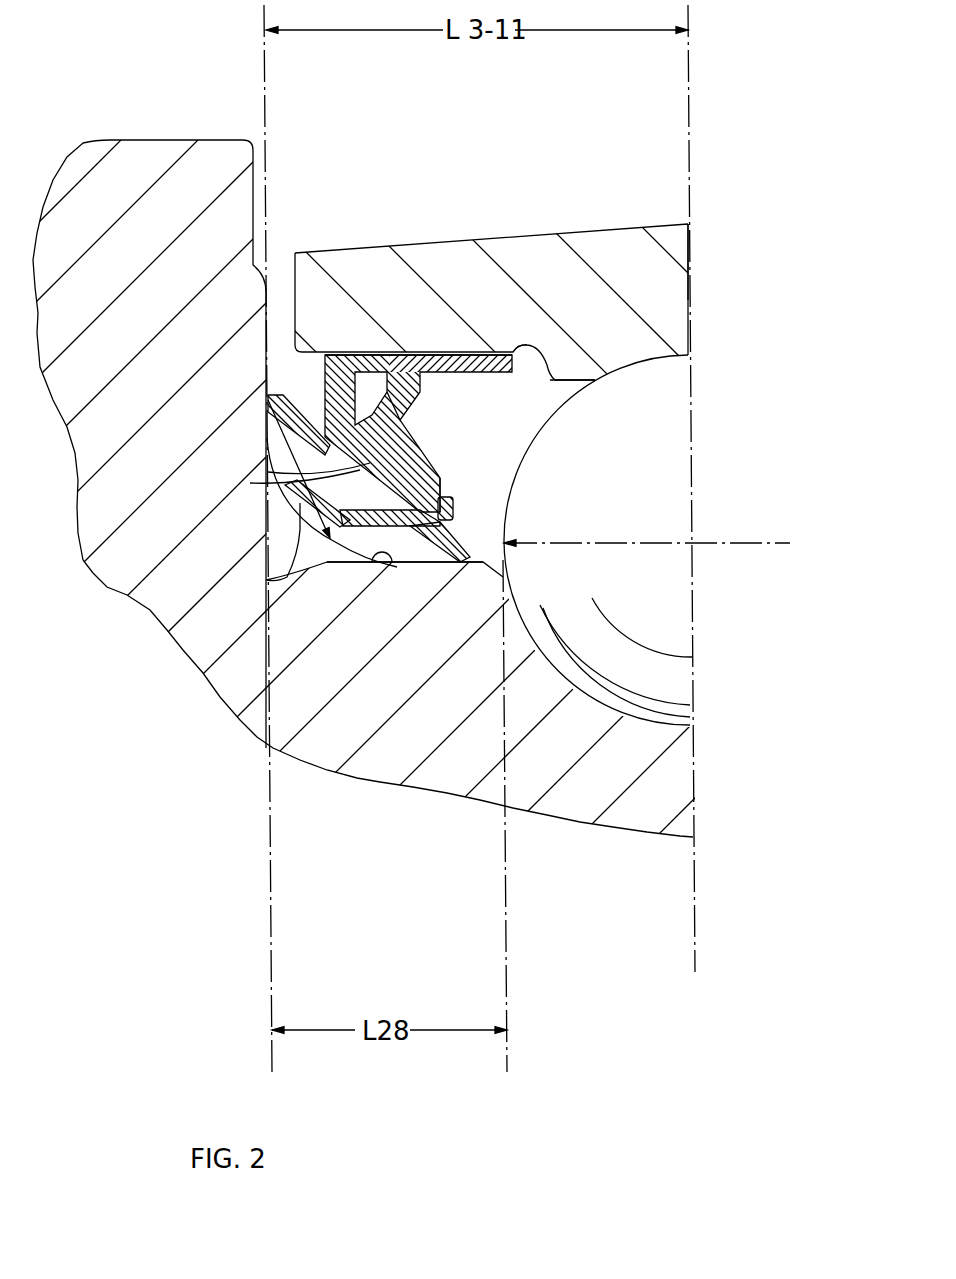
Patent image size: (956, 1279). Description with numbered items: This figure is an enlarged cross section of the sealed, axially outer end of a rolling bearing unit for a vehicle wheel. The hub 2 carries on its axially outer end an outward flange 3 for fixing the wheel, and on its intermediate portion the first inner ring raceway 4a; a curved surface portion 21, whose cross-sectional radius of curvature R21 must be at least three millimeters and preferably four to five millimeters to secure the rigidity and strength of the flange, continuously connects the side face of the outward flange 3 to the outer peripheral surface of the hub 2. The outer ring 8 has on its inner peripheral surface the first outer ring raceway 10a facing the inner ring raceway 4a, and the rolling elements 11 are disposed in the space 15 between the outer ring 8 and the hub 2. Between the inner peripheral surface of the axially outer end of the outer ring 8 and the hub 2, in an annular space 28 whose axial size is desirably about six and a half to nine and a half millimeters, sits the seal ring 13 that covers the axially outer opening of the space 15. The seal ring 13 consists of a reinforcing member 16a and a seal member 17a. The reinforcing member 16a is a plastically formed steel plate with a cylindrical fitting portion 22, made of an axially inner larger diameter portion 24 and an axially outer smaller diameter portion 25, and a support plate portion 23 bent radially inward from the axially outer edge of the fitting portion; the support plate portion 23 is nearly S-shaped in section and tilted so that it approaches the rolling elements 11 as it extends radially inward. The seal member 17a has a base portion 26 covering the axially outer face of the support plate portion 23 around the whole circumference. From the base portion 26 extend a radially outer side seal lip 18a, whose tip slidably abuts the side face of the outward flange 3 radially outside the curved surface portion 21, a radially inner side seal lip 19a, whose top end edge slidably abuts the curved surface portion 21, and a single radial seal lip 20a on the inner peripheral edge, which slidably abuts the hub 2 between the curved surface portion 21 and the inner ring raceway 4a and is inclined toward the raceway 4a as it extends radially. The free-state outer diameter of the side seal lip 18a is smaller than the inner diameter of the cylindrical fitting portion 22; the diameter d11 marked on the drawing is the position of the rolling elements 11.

The hub 2 is at (563, 812).
The outward flange 3 is at (222, 153).
The first inner ring raceway 4a is at (623, 707).
The outer ring 8 is at (573, 277).
The first outer ring raceway 10a is at (636, 362).
The rolling elements 11 is at (670, 393).
The seal ring 13 is at (303, 390).
The space 15 is at (513, 402).
The reinforcing member 16a is at (460, 493).
The seal member 17a is at (300, 478).
The side seal lip 18a is at (268, 400).
The side seal lip 19a is at (267, 580).
The radial seal lip 20a is at (455, 562).
The curved surface portion 21 is at (378, 558).
The radius of curvature R21 is at (410, 402).
The cylindrical fitting portion 22 is at (437, 352).
The support plate portion 23 is at (440, 478).
The larger diameter portion 24 is at (475, 352).
The smaller diameter portion 25 is at (363, 352).
The base portion 26 is at (310, 476).
The annular space 28 is at (462, 400).
The ball diameter / position line d11 is at (573, 543).